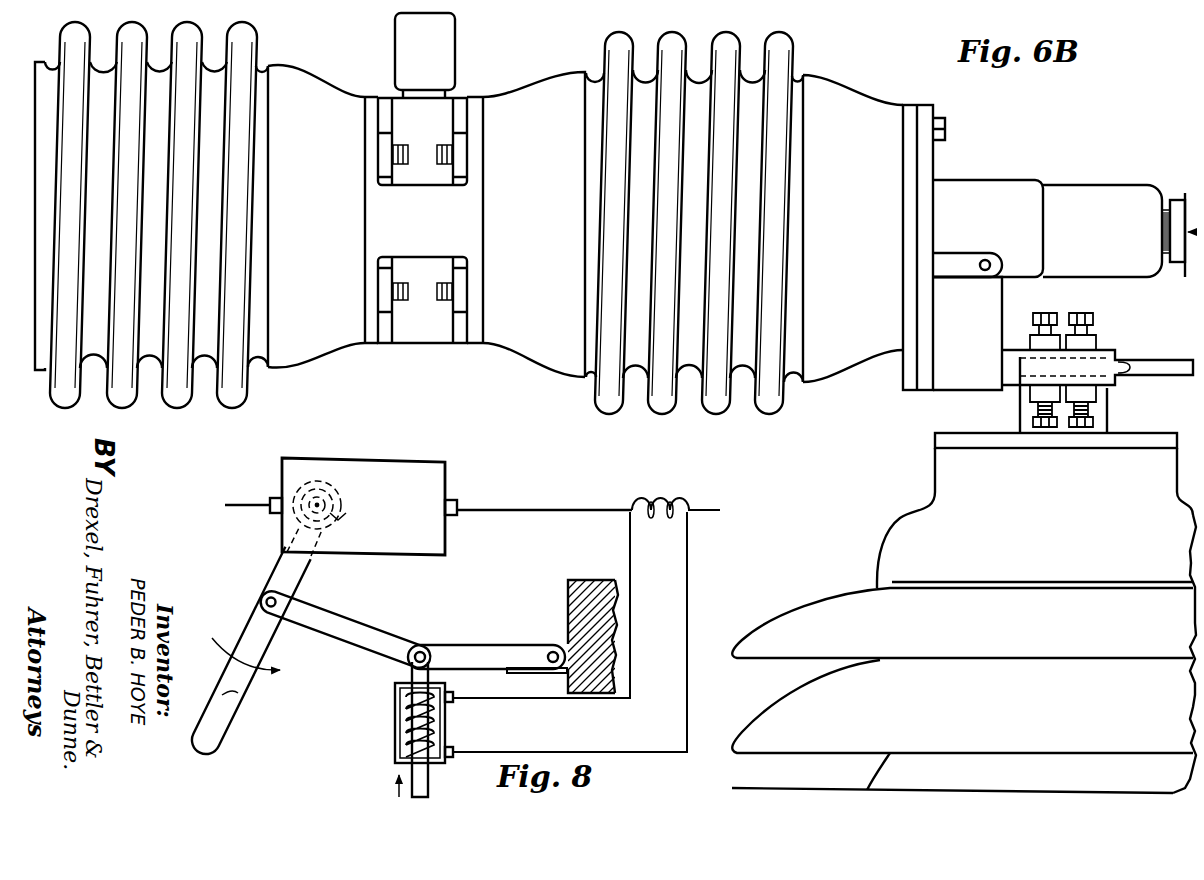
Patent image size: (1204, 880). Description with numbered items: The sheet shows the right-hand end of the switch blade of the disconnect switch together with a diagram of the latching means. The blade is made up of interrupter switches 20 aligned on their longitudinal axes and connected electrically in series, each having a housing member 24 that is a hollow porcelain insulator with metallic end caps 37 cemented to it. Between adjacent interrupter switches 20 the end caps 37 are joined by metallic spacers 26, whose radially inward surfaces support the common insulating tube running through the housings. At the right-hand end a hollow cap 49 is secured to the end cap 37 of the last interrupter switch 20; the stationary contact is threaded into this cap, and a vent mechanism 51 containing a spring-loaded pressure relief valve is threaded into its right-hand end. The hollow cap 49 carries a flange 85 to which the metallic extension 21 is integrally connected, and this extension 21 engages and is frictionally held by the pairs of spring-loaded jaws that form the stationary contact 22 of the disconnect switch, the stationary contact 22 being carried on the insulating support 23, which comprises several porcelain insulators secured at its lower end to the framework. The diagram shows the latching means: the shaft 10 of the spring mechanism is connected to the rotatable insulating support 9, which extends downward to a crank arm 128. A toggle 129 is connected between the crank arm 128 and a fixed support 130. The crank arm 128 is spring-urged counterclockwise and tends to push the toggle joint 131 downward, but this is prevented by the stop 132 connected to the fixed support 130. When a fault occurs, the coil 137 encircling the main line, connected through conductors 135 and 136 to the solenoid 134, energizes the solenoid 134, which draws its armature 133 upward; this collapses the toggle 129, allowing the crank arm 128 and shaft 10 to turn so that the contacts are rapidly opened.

In FIG. 6B, the interrupter switch 20 is at (441, 209).
In FIG. 6B, the housing member 24 is at (133, 37).
In FIG. 6B, the end cap 37 is at (309, 83).
In FIG. 6B, the spacer 26 is at (468, 236).
In FIG. 6B, the vent mechanism 51 is at (459, 52).
In FIG. 6B, the flange 85 is at (929, 166).
In FIG. 6B, the hollow cap 49 is at (991, 186).
In FIG. 6B, the stationary contact 22 is at (1089, 343).
In FIG. 6B, the extension 21 is at (1116, 357).
In FIG. 6B, the insulating support 23 is at (838, 570).
In FIG. 8, the rotatable insulating support 9 is at (297, 511).
In FIG. 8, the shaft 10 is at (330, 516).
In FIG. 8, the crank arm 128 is at (238, 692).
In FIG. 8, the toggle 129 is at (372, 633).
In FIG. 8, the toggle joint 131 is at (441, 652).
In FIG. 8, the fixed support 130 is at (568, 595).
In FIG. 8, the stop 132 is at (538, 674).
In FIG. 8, the armature 133 is at (419, 675).
In FIG. 8, the solenoid 134 is at (413, 737).
In FIG. 8, the conductor 135 is at (556, 697).
In FIG. 8, the conductor 136 is at (641, 738).
In FIG. 8, the coil 137 is at (681, 500).